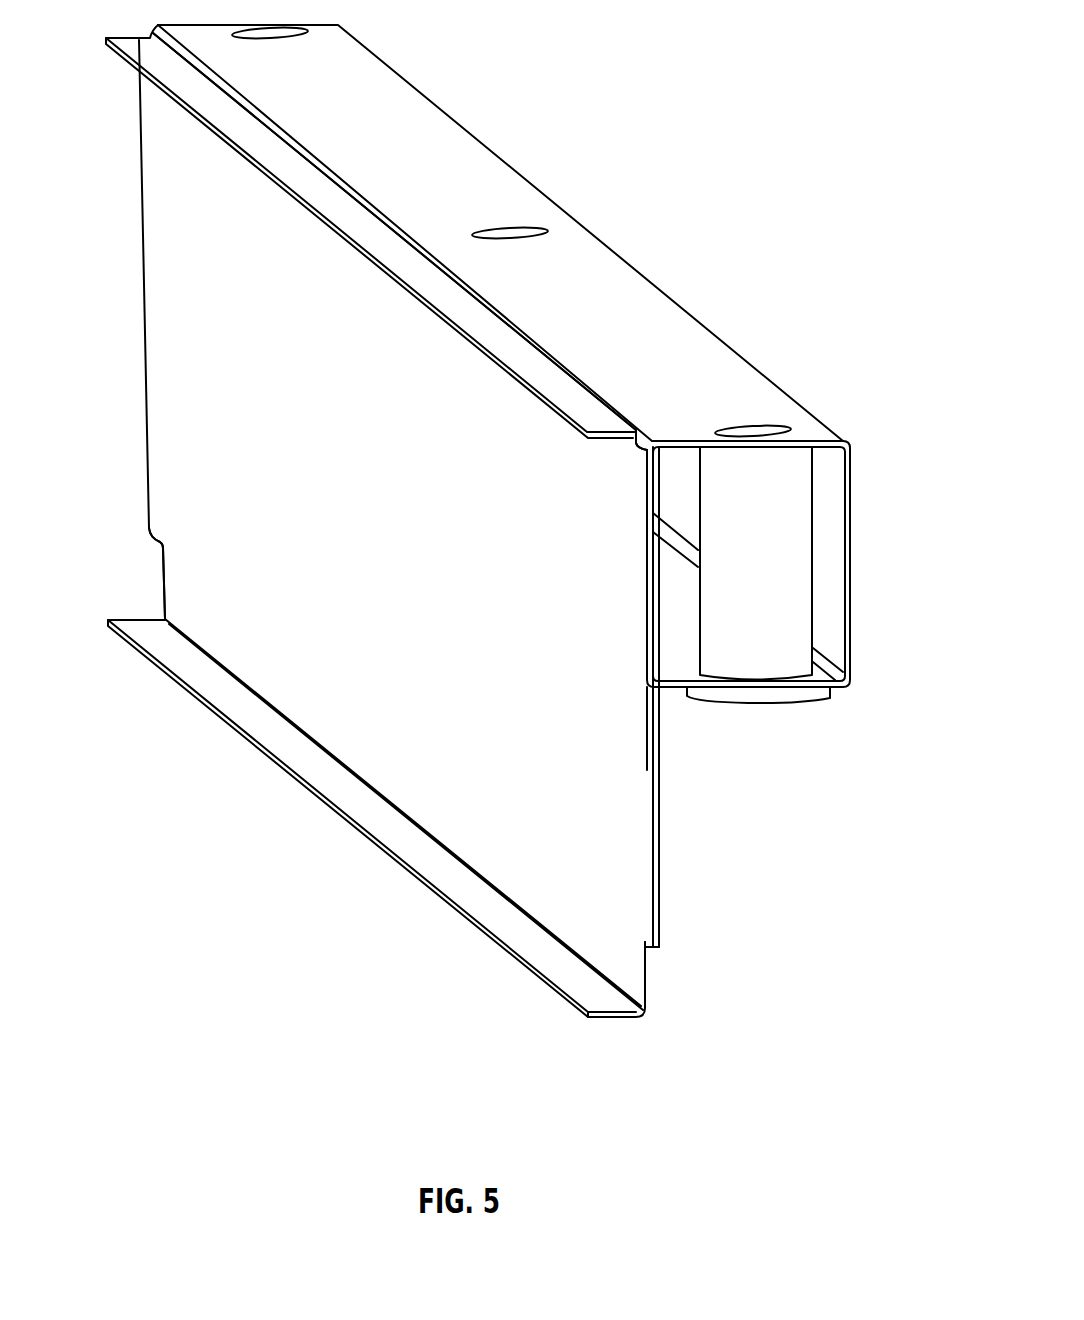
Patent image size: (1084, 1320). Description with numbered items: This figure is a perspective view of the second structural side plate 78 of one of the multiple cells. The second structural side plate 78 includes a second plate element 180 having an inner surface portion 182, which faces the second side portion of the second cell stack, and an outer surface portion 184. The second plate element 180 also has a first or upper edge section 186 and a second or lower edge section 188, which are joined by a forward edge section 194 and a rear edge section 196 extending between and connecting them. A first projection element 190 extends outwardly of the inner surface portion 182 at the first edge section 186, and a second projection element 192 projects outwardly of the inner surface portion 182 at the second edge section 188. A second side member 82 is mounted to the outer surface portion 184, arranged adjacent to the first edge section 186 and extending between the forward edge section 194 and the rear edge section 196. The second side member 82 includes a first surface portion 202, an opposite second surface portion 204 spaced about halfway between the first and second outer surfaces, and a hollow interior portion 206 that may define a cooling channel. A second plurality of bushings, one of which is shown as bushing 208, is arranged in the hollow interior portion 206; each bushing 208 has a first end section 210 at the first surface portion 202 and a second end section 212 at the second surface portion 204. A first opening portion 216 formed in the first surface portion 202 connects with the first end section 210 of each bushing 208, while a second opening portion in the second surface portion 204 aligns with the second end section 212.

The second structural side plate 78 is at (450, 540).
The second side member 82 is at (794, 619).
The second plate element 180 is at (212, 453).
The inner surface portion 182 is at (207, 587).
The outer surface portion 184 is at (660, 850).
The first edge section 186 is at (636, 426).
The second edge section 188 is at (642, 1017).
The first projection element 190 is at (497, 335).
The second projection element 192 is at (332, 790).
The forward edge section 194 is at (655, 895).
The rear edge section 196 is at (142, 222).
The first surface portion 202 is at (500, 233).
The second surface portion 204 is at (670, 692).
The hollow interior portion 206 is at (677, 636).
The bushing 208 is at (815, 558).
The first end section 210 is at (750, 453).
The second end section 212 is at (790, 697).
The first opening portion 216 is at (747, 428).